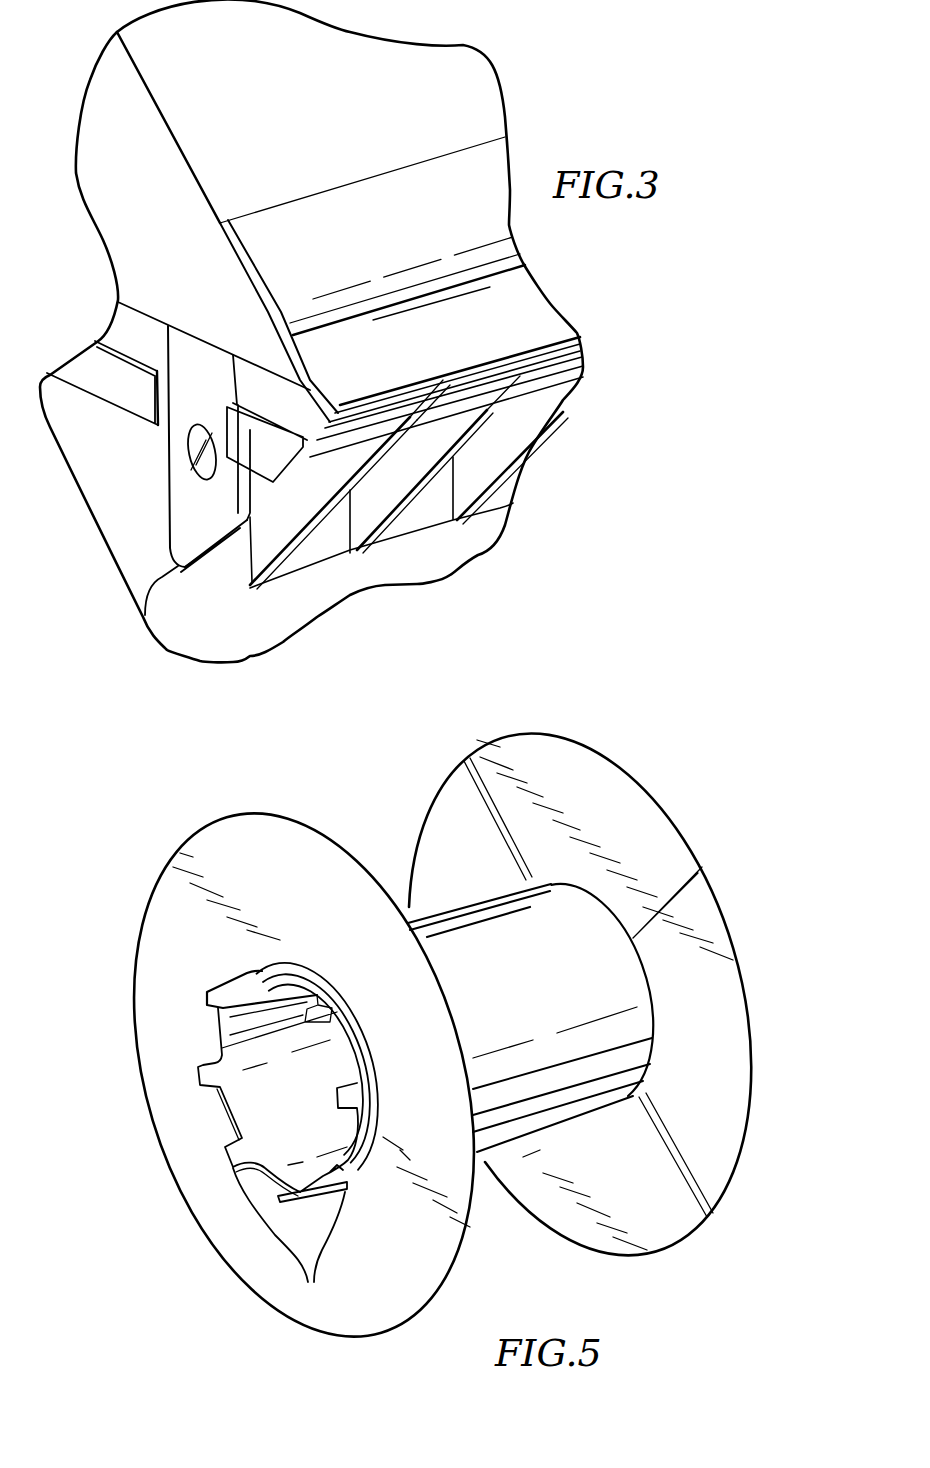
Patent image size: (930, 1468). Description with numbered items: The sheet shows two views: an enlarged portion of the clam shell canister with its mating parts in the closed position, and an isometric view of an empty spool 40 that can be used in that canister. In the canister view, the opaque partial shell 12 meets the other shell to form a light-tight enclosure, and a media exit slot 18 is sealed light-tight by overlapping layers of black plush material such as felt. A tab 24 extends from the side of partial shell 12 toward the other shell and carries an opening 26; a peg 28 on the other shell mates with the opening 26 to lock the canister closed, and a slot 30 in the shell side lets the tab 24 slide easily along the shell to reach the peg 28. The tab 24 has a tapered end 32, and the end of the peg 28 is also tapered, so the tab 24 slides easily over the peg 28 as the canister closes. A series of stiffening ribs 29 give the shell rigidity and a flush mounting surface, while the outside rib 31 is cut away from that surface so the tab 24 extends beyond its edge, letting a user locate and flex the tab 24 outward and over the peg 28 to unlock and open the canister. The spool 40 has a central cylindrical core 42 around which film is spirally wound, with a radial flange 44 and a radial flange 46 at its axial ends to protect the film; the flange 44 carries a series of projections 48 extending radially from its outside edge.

In FIG. 3, the partial shell 12 is at (502, 88).
In FIG. 3, the media exit slot 18 is at (567, 393).
In FIG. 3, the tab 24 is at (170, 485).
In FIG. 3, the opening 26 is at (240, 410).
In FIG. 3, the peg 28 is at (200, 470).
In FIG. 3, the stiffening ribs 29 is at (392, 525).
In FIG. 3, the slot 30 is at (170, 382).
In FIG. 3, the outside rib 31 is at (150, 573).
In FIG. 3, the tapered end 32 is at (207, 553).
In FIG. 5, the spool 40 is at (613, 750).
In FIG. 5, the central cylindrical core 42 is at (540, 995).
In FIG. 5, the radial flange 44 is at (170, 888).
In FIG. 5, the radial flange 46 is at (447, 800).
In FIG. 5, the projections 48 is at (198, 1067).